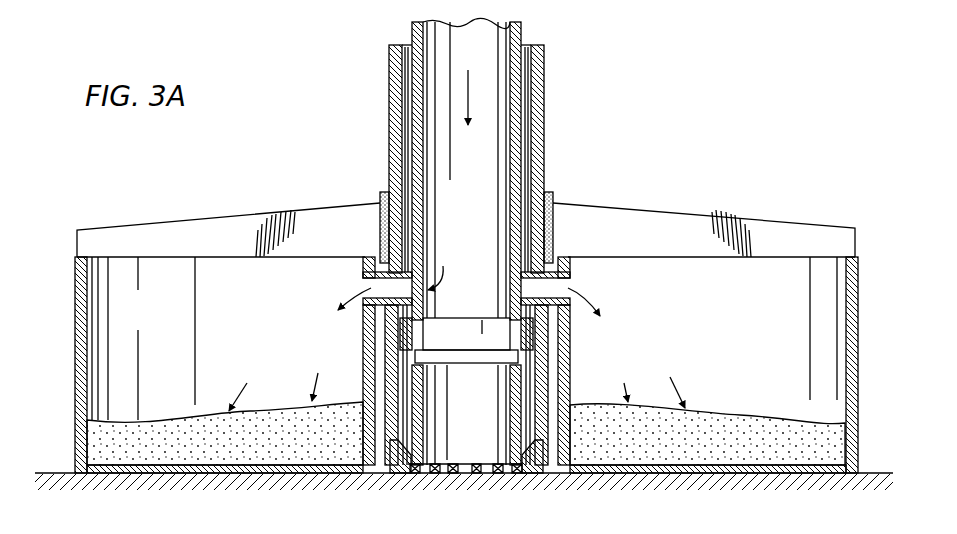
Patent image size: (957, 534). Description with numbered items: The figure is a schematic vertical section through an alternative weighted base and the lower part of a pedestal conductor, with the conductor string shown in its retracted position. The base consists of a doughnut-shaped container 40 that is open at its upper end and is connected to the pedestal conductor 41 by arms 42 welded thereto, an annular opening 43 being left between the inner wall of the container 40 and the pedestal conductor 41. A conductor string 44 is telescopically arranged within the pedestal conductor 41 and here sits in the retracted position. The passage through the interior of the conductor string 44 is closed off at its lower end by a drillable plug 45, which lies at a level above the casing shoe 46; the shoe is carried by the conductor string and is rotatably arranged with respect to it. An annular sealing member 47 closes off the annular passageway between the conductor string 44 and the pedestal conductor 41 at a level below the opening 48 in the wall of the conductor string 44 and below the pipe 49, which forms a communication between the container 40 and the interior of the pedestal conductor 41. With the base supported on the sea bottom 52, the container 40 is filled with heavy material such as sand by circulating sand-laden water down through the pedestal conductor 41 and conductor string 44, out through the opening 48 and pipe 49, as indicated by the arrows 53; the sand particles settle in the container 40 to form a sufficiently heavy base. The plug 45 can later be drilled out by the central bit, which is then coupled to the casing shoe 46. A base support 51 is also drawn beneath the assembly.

The container 40 is at (97, 331).
The pedestal conductor 41 is at (547, 72).
The arms 42 is at (238, 228).
The annular opening 43 is at (557, 368).
The conductor string 44 is at (520, 144).
The drillable plug 45 is at (470, 350).
The casing shoe 46 is at (455, 468).
The annular sealing member 47 is at (400, 332).
The opening 48 is at (503, 287).
The pipe 49 is at (568, 278).
The base support 51 is at (530, 466).
The sea bottom 52 is at (50, 473).
The arrows 53 is at (468, 90).